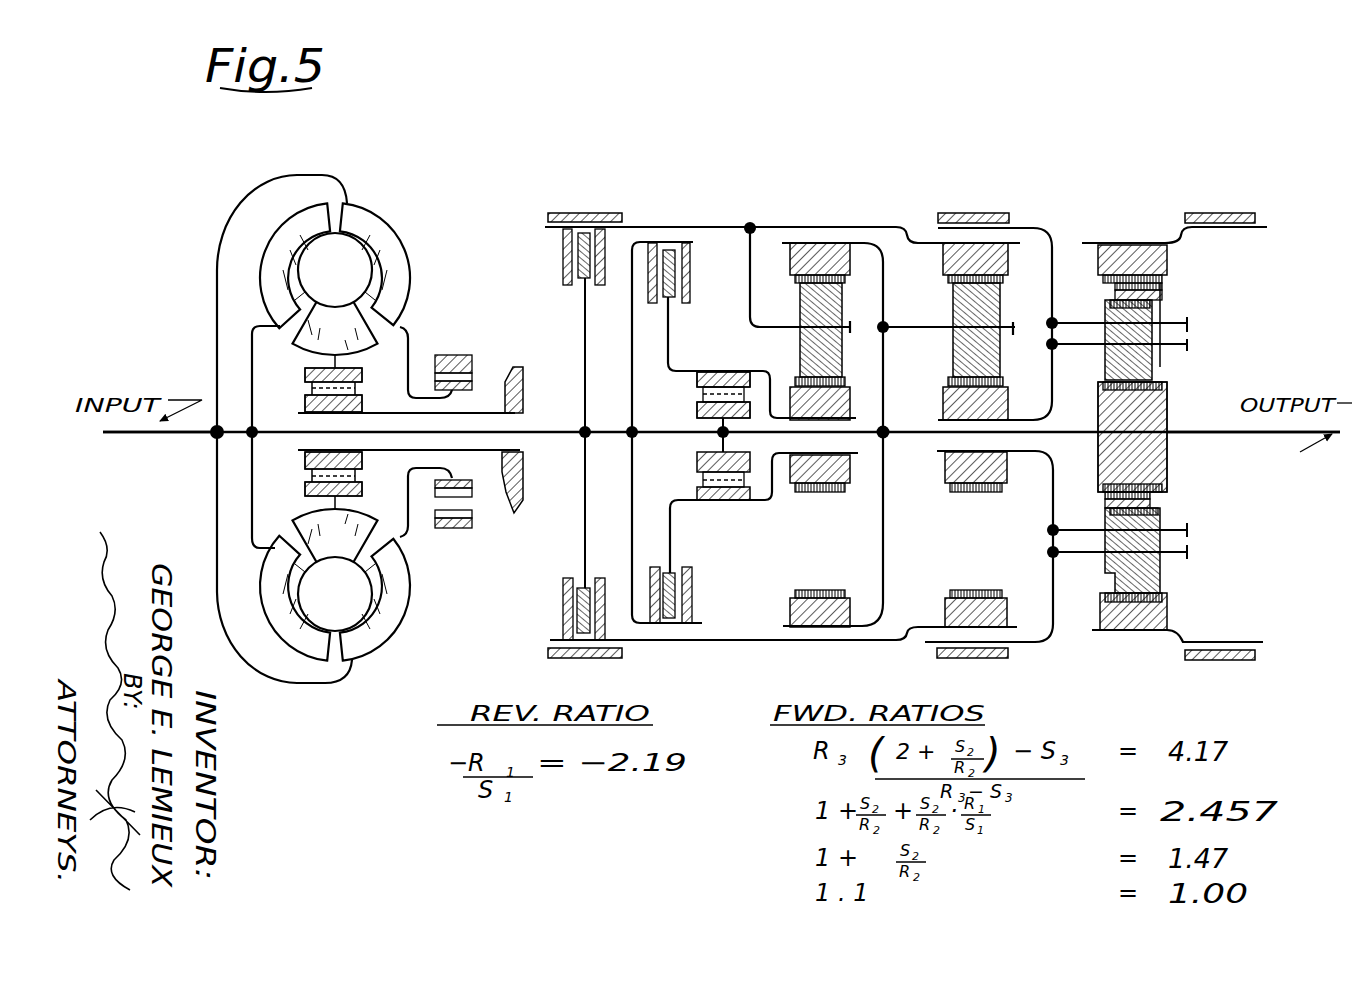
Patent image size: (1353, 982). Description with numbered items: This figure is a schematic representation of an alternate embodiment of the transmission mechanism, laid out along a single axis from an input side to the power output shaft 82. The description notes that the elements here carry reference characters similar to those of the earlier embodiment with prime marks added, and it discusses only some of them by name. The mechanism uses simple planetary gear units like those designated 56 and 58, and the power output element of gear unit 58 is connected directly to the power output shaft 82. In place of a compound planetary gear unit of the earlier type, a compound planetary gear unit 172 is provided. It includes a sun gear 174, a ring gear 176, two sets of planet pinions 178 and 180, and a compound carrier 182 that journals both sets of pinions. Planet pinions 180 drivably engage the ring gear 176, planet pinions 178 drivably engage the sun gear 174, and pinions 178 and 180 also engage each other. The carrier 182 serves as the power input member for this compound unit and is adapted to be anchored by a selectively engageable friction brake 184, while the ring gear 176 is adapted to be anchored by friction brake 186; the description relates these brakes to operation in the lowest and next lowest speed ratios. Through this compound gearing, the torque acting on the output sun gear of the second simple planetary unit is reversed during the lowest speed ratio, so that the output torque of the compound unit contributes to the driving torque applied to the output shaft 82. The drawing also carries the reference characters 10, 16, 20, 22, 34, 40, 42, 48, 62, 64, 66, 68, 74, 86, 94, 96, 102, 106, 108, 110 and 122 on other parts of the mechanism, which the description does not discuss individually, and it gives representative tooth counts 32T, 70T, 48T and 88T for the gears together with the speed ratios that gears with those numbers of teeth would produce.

The planetary gear unit 10 is at (359, 412).
The ring gear 16 is at (400, 262).
The carrier 40 is at (265, 268).
The sun gear 42 is at (342, 299).
The housing 20 is at (215, 325).
The input shaft 22 is at (162, 433).
The clutch 48 is at (456, 356).
The flange 34 is at (552, 436).
The brake 86 is at (552, 257).
The clutch 96 is at (594, 212).
The clutch 102 is at (694, 253).
The clutch drum 94 is at (744, 226).
The sleeve shaft 64 is at (748, 298).
The bearing 110 is at (723, 369).
The bearing race 108 is at (700, 378).
The bearing race 106 is at (700, 416).
The simple planetary gear unit 56 is at (817, 385).
The planet gear 66 is at (800, 306).
The carrier 68 is at (751, 333).
The sun gear 62 is at (815, 491).
The carrier connection 74 is at (942, 405).
The simple planetary gear unit 58 is at (961, 240).
The clutch drum 122 is at (1036, 224).
The friction brake 184 is at (988, 214).
The compound carrier 182 is at (1050, 555).
The compound planetary gear unit 172 is at (1186, 397).
The ring gear 176 is at (1167, 270).
The planet pinions 180 is at (1162, 307).
The planet pinions 178 is at (1152, 337).
The sun gear 174 is at (1167, 400).
The friction brake 186 is at (1232, 213).
The power output shaft 82 is at (1263, 437).
The sun gear tooth count 32T is at (796, 494).
The ring gear tooth count 70T is at (818, 589).
The sun gear tooth count 48T is at (1167, 479).
The ring gear tooth count 88T is at (1167, 603).